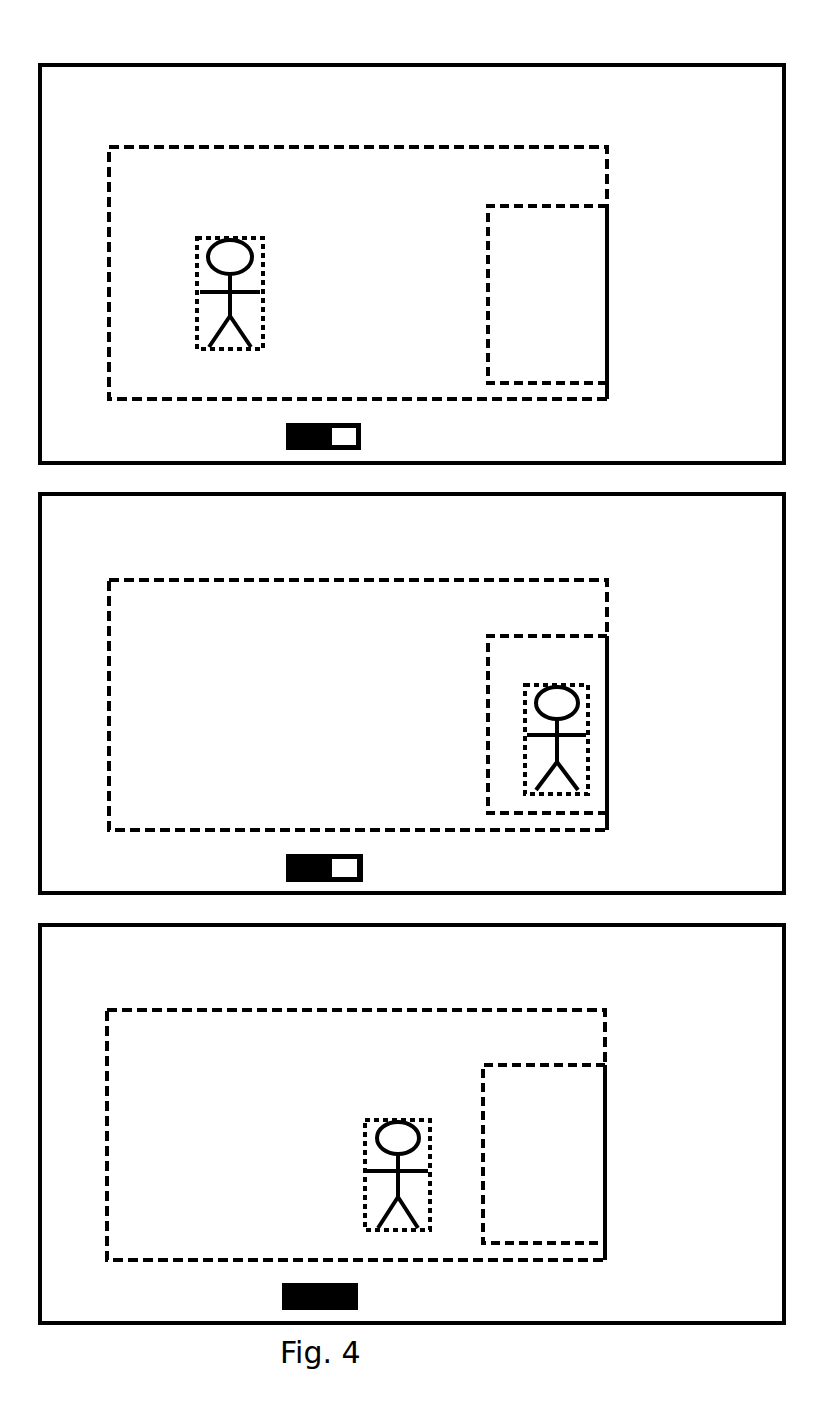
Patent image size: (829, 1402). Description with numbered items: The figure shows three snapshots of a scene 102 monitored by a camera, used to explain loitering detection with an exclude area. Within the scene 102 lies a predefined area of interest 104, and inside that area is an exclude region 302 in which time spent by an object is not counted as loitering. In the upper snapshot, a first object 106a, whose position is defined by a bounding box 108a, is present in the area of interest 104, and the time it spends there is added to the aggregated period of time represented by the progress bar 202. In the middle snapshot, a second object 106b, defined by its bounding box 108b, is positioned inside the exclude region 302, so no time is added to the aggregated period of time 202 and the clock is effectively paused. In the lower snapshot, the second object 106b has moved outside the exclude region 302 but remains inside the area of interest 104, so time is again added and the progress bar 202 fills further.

The scene 102 is at (660, 64).
The area of interest 104 is at (537, 148).
The exclude region 302 is at (488, 233).
The first object 106a is at (243, 240).
The second object 106b is at (556, 684).
The bounding box 108a is at (262, 282).
The bounding box 108b is at (535, 794).
The progress bar 202 is at (363, 442).